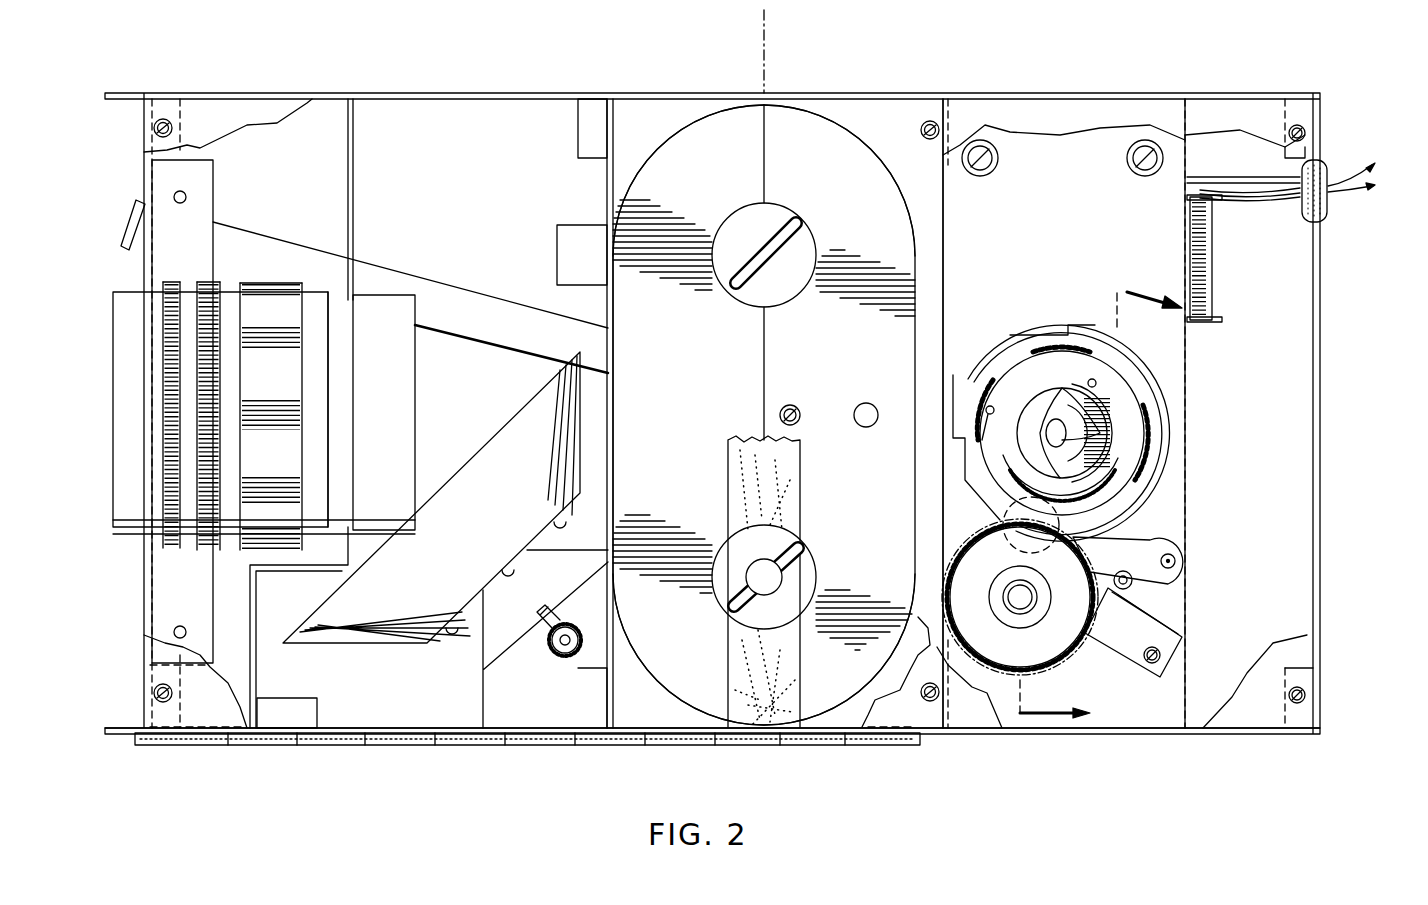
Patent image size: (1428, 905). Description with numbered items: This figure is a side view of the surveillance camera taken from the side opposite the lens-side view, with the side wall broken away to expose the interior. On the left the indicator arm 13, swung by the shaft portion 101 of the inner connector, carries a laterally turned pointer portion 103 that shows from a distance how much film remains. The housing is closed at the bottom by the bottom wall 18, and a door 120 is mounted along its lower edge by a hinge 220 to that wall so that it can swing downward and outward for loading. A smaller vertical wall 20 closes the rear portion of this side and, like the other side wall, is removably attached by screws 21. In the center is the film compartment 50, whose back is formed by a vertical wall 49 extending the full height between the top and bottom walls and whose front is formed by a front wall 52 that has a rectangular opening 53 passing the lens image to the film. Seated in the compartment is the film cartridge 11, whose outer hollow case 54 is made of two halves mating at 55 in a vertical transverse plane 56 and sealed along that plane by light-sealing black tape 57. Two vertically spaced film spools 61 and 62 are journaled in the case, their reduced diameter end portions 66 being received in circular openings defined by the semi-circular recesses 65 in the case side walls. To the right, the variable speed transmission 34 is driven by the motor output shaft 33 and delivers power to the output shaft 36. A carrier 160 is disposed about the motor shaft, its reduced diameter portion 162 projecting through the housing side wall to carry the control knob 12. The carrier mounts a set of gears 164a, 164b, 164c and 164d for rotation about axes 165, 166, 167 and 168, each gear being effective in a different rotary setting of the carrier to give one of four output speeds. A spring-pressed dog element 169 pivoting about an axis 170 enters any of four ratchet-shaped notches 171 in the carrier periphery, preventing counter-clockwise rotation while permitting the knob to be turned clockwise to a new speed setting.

The film cartridge 11 is at (790, 125).
The control knob 12 is at (1150, 430).
The indicator arm 13 is at (265, 242).
The bottom wall 18 is at (1101, 498).
The vertical wall 20 is at (1215, 118).
The screws 21 is at (1306, 133).
The output shaft 33 is at (1050, 420).
The variable speed transmission 34 is at (1042, 322).
The output shaft 36 is at (1014, 604).
The vertical wall 49 is at (940, 222).
The compartment 50 is at (764, 415).
The front wall 52 is at (605, 172).
The rectangular opening 53 is at (615, 470).
The outer hollow case 54 is at (710, 130).
The mating line 55 is at (768, 165).
The vertical transverse plane 56 is at (767, 43).
The light-sealing black tape 57 is at (795, 470).
The film spool 61 is at (808, 250).
The film spool 62 is at (812, 577).
The semi-circular recesses 65 is at (745, 218).
The reduced diameter end portions 66 is at (793, 214).
The shaft portion 101 is at (870, 402).
The pointer portion 103 is at (130, 224).
The door 120 is at (205, 715).
The carrier 160 is at (1162, 370).
The reduced diameter portion 162 is at (1114, 384).
The gear 164a is at (1097, 345).
The gear 164b is at (1178, 478).
The gear 164c is at (1022, 503).
The gear 164d is at (965, 395).
The axis 165 is at (1092, 378).
The axis 166 is at (1172, 465).
The axis 167 is at (1002, 528).
The axis 168 is at (1003, 428).
The dog element 169 is at (1160, 540).
The axis 170 is at (1176, 562).
The ratchet-shaped notches 171 is at (1172, 395).
The hinge 220 is at (492, 738).